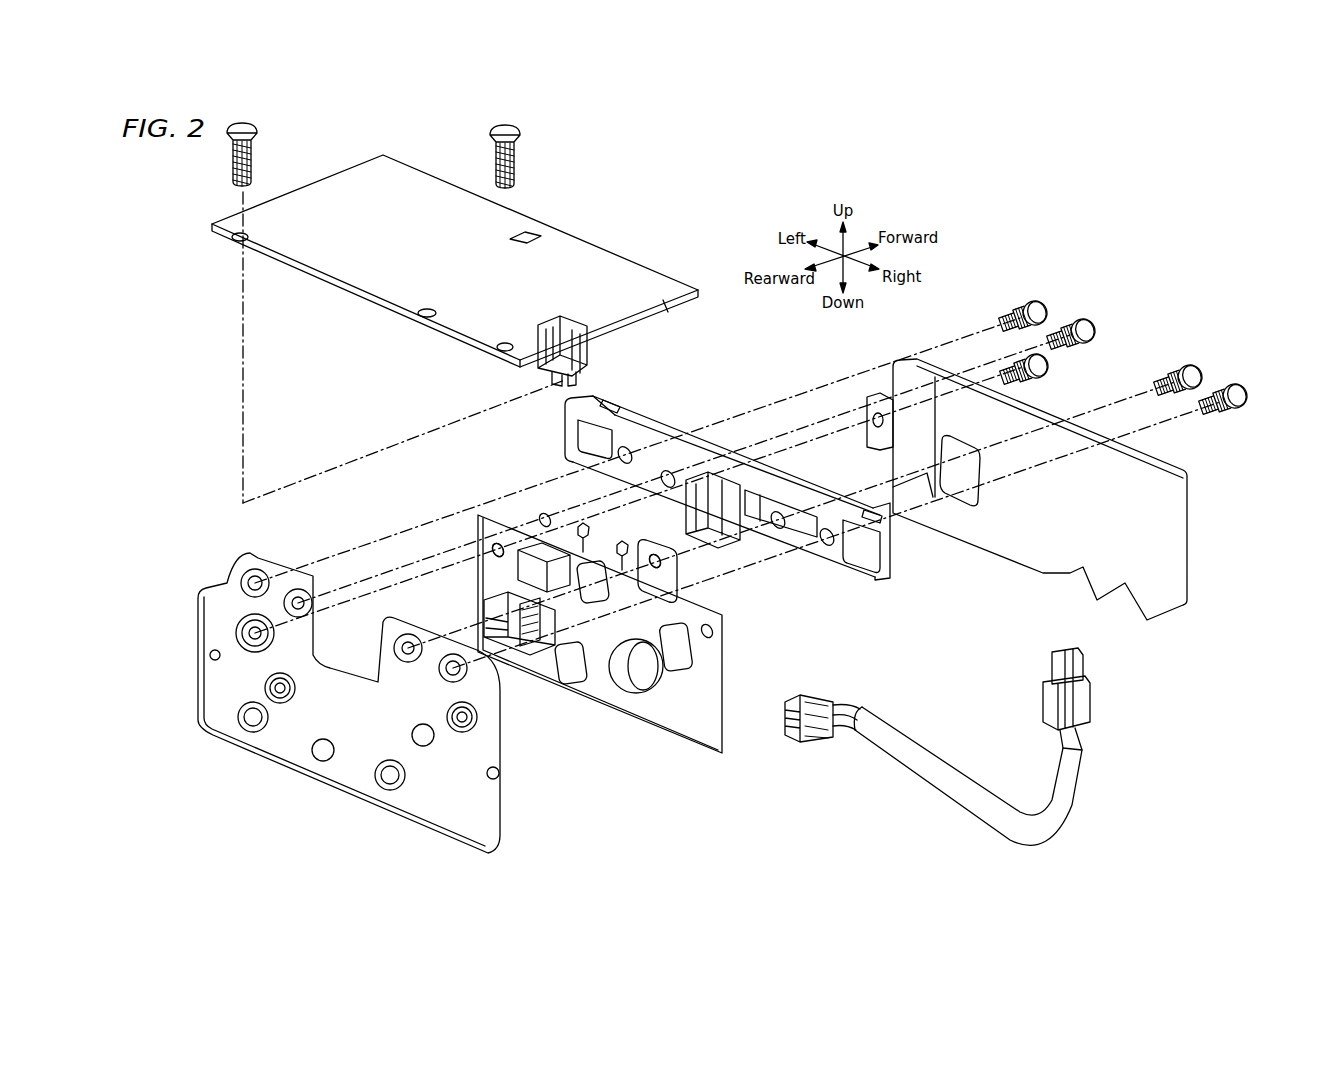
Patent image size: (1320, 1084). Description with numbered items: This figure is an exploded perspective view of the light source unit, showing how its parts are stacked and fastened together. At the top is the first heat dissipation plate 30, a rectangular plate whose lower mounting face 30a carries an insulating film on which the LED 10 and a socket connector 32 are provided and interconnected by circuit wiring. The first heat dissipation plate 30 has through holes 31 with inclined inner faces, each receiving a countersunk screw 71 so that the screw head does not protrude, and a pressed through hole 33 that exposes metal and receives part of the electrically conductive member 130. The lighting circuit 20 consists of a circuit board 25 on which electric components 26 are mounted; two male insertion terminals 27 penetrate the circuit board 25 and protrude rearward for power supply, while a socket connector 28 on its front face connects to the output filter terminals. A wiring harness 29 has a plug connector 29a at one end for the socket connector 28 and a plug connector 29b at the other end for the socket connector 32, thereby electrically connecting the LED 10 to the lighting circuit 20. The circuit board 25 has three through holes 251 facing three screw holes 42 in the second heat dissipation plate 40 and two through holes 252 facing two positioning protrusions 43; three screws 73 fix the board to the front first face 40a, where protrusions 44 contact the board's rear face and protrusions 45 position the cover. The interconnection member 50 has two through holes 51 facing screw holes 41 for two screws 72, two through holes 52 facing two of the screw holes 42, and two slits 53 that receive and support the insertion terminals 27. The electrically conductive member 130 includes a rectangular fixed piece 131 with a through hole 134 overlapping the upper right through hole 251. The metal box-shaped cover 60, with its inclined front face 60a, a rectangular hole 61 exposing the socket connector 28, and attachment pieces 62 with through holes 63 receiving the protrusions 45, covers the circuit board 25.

The LED 10 is at (528, 244).
The lighting circuit 20 is at (732, 664).
The circuit board 25 is at (667, 716).
The electric components 26 is at (684, 660).
The insertion terminals 27 is at (586, 537).
The socket connector 28 is at (550, 627).
The wiring harness 29 is at (1072, 778).
The plug connector 29a is at (813, 742).
The plug connector 29b is at (1091, 670).
The first heat dissipation plate 30 is at (675, 266).
The mounting face 30a is at (665, 303).
The through holes 31 is at (237, 242).
The socket connector 32 is at (588, 350).
The through hole 33 is at (425, 318).
The second heat dissipation plate 40 is at (276, 775).
The first face 40a is at (343, 780).
The screw holes 41 is at (260, 580).
The screw holes 42 is at (302, 601).
The protrusions 43 is at (290, 689).
The protrusions 44 is at (262, 723).
The protrusions 45 is at (219, 660).
The interconnection member 50 is at (870, 580).
The through holes 51 is at (628, 447).
The through holes 52 is at (670, 469).
The slits 53 is at (708, 530).
The cover 60 is at (1097, 452).
The front face 60a is at (1173, 528).
The rectangular hole 61 is at (974, 467).
The attachment piece 62 is at (878, 448).
The through holes 63 is at (872, 425).
The countersunk screw 71 is at (253, 147).
The screws 72 is at (1038, 302).
The screws 73 is at (1092, 334).
The electrically conductive member 130 is at (661, 580).
The fixed piece 131 is at (643, 565).
The through hole 134 is at (661, 564).
The through holes 251 is at (496, 543).
The through holes 252 is at (552, 617).